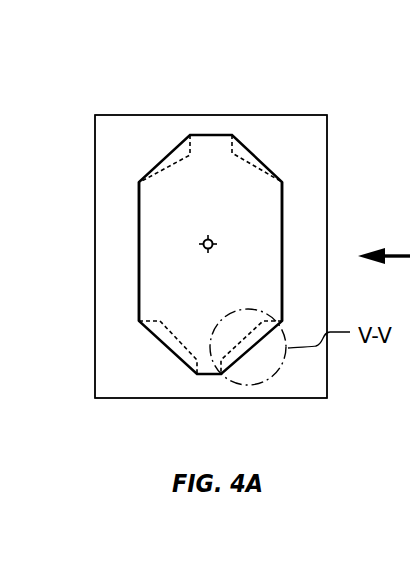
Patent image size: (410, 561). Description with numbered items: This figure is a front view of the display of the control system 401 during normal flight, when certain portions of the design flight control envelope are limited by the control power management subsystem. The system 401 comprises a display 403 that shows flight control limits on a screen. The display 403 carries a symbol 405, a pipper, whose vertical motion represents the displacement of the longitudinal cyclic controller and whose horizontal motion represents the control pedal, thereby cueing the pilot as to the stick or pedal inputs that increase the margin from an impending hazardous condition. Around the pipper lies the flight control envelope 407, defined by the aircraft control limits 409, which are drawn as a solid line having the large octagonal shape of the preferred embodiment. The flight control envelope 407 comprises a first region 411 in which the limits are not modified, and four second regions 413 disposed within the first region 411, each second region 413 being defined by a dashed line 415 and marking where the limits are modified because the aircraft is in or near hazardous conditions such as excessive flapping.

The control system 401 is at (114, 86).
The display 403 is at (268, 115).
The symbol 405 is at (216, 243).
The flight control envelope 407 is at (127, 200).
The aircraft control limits 409 is at (282, 283).
The first region 411 is at (158, 244).
The second region 413 is at (155, 331).
The dashed line 415 is at (256, 173).